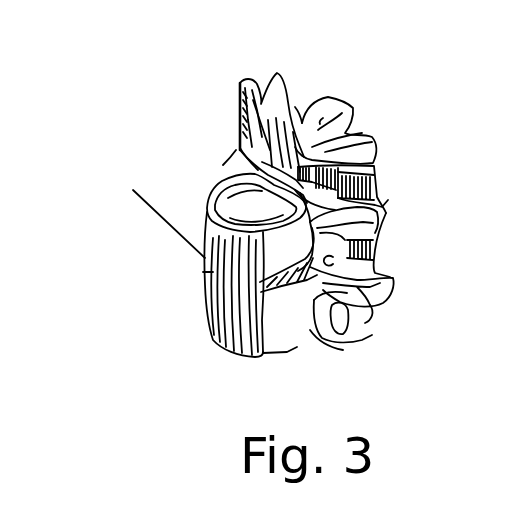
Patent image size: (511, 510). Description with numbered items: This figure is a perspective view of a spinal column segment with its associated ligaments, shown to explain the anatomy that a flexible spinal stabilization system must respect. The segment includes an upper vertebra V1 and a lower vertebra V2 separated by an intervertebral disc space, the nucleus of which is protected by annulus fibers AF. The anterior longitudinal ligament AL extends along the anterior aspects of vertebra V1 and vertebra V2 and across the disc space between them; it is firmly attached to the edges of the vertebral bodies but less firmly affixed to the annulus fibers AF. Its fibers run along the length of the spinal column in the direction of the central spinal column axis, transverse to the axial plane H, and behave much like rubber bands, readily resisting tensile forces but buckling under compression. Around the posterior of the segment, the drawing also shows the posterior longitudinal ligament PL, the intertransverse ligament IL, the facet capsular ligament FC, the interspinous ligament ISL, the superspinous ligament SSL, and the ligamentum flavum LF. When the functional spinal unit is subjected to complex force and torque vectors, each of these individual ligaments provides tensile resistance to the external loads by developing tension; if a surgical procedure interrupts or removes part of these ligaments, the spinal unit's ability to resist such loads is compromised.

The intertransverse ligament IL is at (229, 96).
The ligamentum flavum LF is at (302, 125).
The posterior longitudinal ligament PL is at (238, 151).
The upper vertebra V1 is at (231, 202).
The facet capsular ligament FC is at (372, 163).
The axial plane H is at (173, 233).
The interspinous ligament ISL is at (373, 187).
The anterior longitudinal ligament AL is at (207, 273).
The superspinous ligament SSL is at (377, 247).
The annulus fibers AF is at (283, 337).
The lower vertebra V2 is at (297, 285).